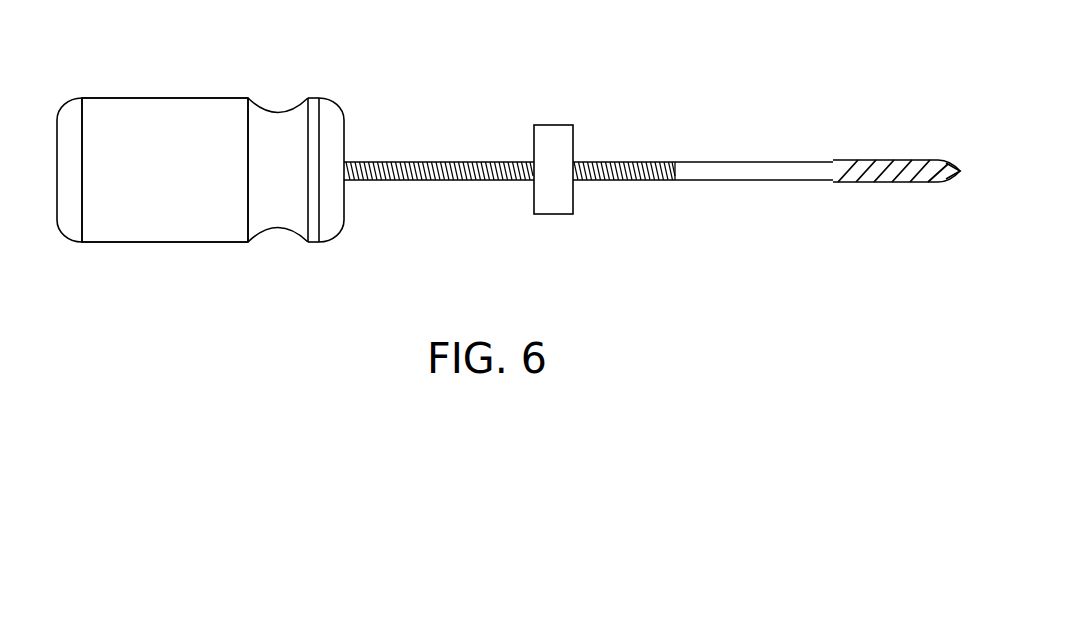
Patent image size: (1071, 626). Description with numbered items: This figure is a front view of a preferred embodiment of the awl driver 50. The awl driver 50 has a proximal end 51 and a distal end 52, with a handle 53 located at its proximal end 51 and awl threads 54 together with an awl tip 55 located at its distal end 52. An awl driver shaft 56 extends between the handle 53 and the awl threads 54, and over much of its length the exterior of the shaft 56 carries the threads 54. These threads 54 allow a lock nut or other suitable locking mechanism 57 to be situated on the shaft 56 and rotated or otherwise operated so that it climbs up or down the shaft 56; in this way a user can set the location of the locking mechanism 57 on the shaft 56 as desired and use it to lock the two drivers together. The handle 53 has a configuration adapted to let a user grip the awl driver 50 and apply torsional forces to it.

The awl driver 50 is at (735, 47).
The proximal end 51 is at (118, 238).
The distal end 52 is at (912, 182).
The handle 53 is at (187, 108).
The awl threads 54 is at (463, 162).
The awl tip 55 is at (945, 165).
The awl driver shaft 56 is at (732, 170).
The locking mechanism 57 is at (555, 214).